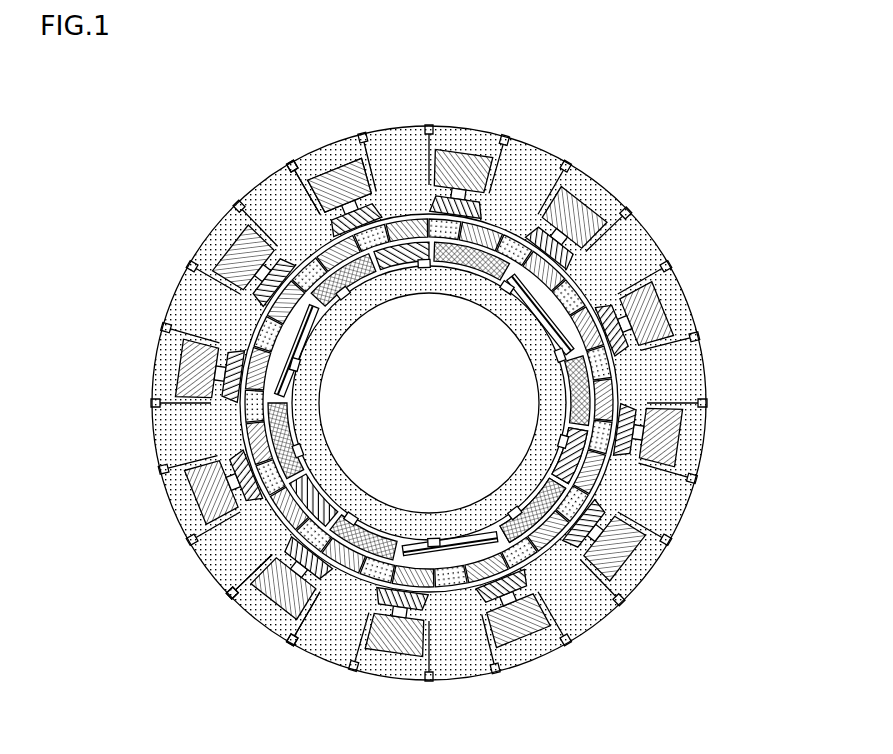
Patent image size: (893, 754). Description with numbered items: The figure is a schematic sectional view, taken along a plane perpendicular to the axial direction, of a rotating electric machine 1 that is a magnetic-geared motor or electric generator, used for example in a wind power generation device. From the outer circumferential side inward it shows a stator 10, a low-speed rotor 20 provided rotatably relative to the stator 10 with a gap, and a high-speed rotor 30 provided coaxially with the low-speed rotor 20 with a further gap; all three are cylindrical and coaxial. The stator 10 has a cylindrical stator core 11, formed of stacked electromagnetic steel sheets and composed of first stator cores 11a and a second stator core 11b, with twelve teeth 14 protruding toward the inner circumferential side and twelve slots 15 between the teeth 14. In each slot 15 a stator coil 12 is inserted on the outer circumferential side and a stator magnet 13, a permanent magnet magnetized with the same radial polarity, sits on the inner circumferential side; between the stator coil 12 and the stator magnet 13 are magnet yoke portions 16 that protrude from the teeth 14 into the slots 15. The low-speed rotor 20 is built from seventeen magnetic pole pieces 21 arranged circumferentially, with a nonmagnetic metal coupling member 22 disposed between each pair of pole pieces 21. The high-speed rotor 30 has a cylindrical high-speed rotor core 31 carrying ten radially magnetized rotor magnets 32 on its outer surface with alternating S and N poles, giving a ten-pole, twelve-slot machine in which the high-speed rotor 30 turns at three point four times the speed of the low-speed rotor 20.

The rotating electric machine 1 is at (158, 130).
The stator 10 is at (208, 242).
The stator core 11 is at (232, 594).
The first stator cores 11a is at (263, 613).
The second stator core 11b is at (312, 630).
The stator coil 12 is at (298, 147).
The stator magnet 13 is at (368, 147).
The teeth 14 is at (235, 325).
The slots 15 is at (343, 165).
The magnet yoke portions 16 is at (292, 222).
The low-speed rotor 20 is at (538, 200).
The magnetic pole pieces 21 is at (627, 373).
The coupling members 22 is at (567, 290).
The high-speed rotor 30 is at (548, 470).
The high-speed rotor core 31 is at (563, 462).
The rotor magnets 32 is at (560, 490).